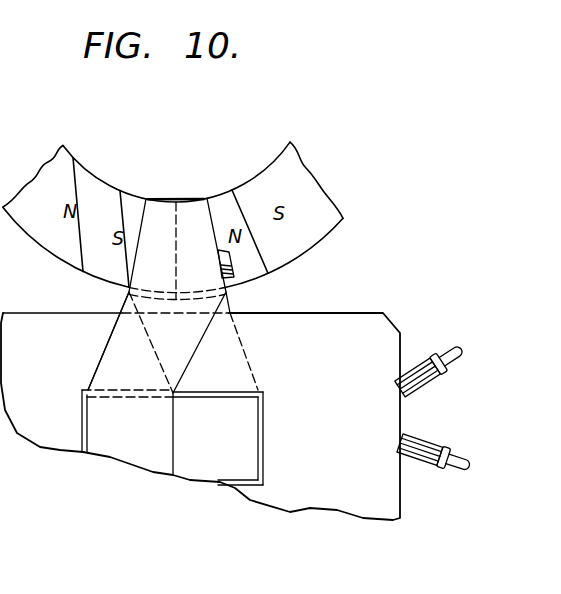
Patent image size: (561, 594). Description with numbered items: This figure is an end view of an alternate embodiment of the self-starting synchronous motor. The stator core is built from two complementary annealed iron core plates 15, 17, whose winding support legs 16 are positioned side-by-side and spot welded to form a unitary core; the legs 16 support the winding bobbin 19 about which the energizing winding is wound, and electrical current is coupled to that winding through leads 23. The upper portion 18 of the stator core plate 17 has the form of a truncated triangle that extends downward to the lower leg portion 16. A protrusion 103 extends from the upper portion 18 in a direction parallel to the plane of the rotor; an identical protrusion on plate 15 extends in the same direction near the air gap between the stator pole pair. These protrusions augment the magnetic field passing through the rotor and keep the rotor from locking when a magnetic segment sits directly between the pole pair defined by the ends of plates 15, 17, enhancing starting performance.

The core plate 15 is at (246, 354).
The winding support legs 16 is at (264, 457).
The core plate 17 is at (108, 355).
The upper portion of stator core plate 18 is at (164, 198).
The winding bobbin 19 is at (400, 482).
The leads 23 is at (423, 387).
The protrusion 103 is at (219, 250).